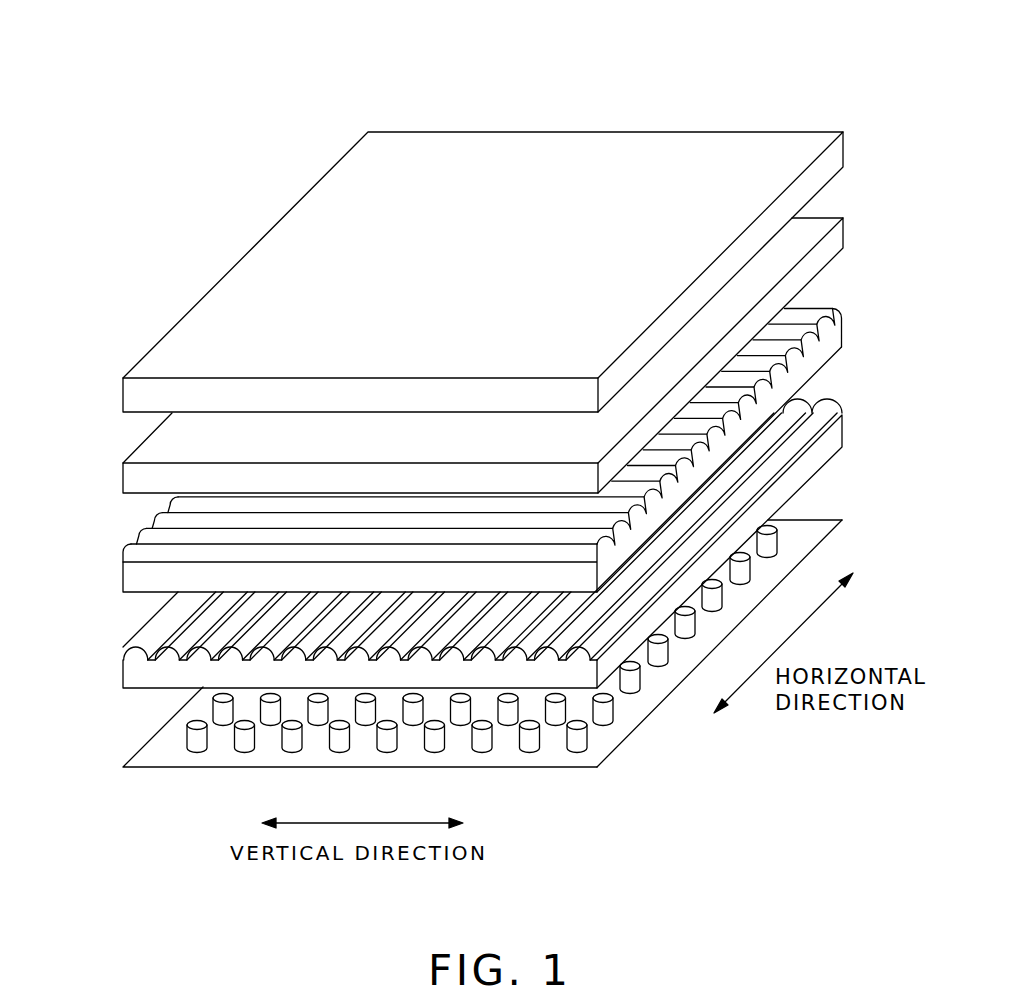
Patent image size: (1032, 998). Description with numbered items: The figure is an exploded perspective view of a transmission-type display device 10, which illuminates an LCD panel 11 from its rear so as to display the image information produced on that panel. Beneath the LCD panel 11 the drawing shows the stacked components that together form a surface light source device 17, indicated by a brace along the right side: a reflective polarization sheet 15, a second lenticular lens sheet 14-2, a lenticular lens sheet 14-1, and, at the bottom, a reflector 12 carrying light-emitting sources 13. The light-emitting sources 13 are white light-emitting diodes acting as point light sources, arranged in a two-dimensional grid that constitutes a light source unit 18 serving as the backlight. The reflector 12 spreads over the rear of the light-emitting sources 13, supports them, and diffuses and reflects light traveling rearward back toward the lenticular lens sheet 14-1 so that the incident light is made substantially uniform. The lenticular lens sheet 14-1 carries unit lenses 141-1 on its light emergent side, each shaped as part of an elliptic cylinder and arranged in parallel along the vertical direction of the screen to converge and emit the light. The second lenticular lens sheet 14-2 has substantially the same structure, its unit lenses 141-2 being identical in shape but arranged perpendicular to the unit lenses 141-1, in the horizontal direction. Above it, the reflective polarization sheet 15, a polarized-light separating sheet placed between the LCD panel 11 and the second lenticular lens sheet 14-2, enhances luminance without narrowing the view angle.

The transmission-type display device 10 is at (719, 120).
The LCD panel 11 is at (130, 397).
The reflective polarization sheet 15 is at (130, 478).
The second lenticular lens sheet 14-2 is at (133, 574).
The unit lens 141-2 is at (142, 530).
The lenticular lens sheet 14-1 is at (143, 680).
The unit lens 141-1 is at (182, 636).
The surface light source device 17 is at (843, 190).
The reflector 12 is at (510, 770).
The light-emitting sources 13 is at (192, 737).
The light source unit 18 is at (670, 700).